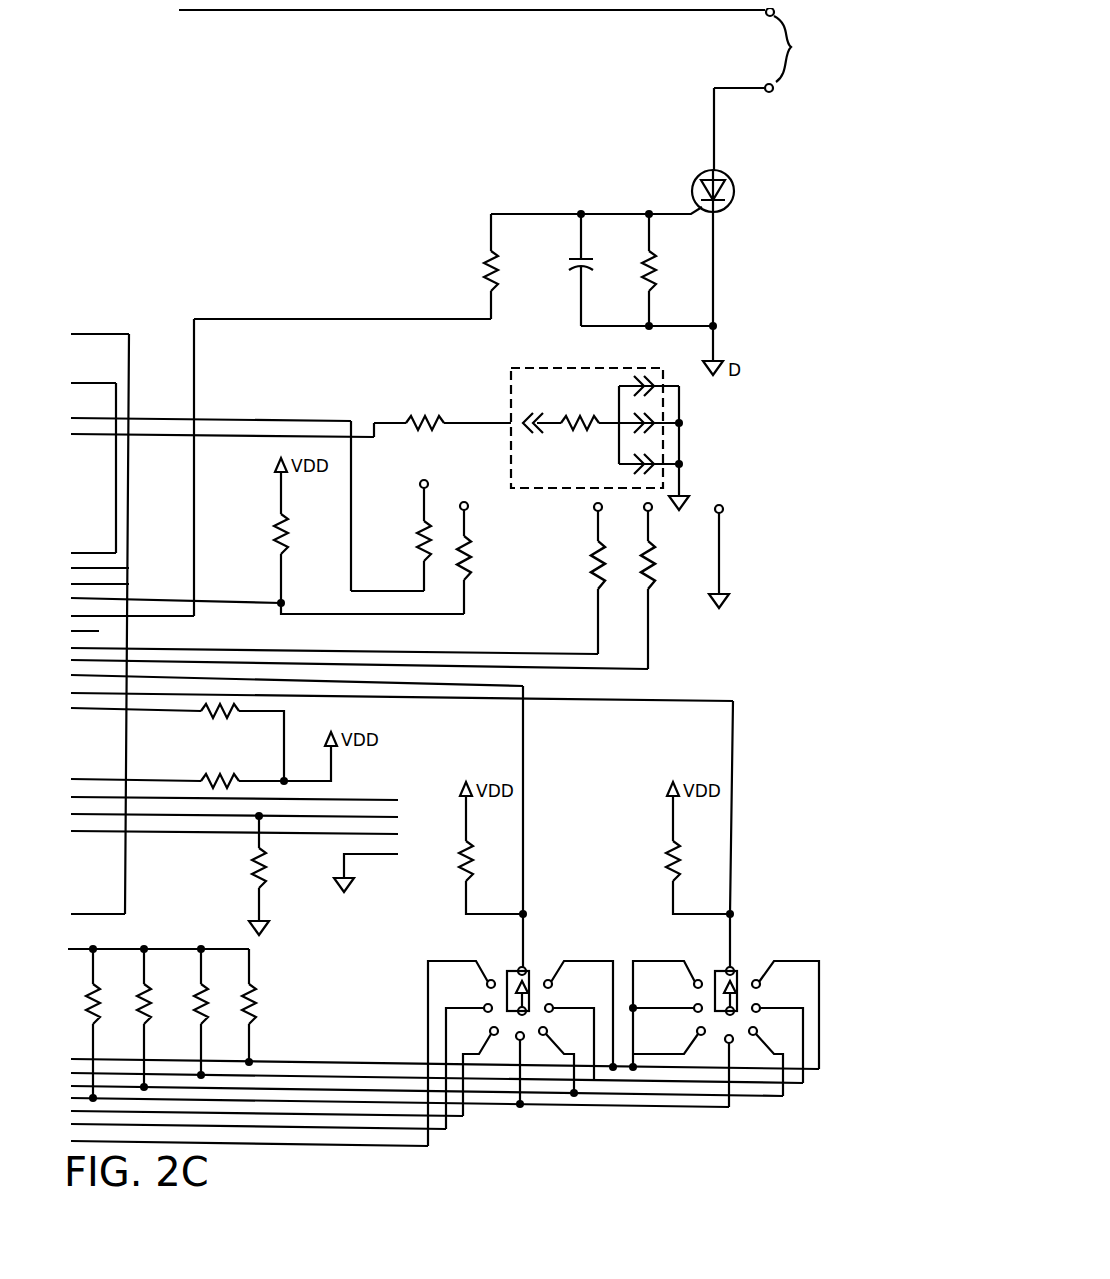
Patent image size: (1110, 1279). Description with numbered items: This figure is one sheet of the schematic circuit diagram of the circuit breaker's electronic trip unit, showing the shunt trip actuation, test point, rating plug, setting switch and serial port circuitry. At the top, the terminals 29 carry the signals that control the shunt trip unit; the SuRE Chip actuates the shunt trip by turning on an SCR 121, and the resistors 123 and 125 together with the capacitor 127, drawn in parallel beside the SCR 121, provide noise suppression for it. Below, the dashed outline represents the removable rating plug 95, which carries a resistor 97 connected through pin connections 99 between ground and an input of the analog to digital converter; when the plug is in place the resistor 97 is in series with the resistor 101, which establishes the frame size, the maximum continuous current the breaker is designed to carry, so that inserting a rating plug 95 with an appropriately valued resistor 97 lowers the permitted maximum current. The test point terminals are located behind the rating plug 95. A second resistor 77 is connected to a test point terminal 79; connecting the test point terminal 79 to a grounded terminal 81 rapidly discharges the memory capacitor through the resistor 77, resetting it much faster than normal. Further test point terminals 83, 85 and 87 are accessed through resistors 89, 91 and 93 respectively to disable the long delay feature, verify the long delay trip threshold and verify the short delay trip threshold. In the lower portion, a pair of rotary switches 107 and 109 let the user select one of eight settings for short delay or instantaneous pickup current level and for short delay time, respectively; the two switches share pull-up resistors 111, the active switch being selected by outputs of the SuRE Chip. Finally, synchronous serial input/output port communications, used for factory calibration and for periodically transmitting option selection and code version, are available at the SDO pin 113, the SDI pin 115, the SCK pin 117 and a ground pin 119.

The terminals 29 is at (767, 50).
The SCR 121 is at (691, 184).
The resistor 123 is at (498, 272).
The resistor 125 is at (655, 270).
The capacitor 127 is at (588, 262).
The rating plug 95 is at (508, 390).
The resistor 97 is at (586, 414).
The pin connections 99 is at (643, 380).
The resistor 101 is at (420, 412).
The second resistor 77 is at (418, 546).
The test point terminal 79 is at (421, 480).
The test point terminal 83 is at (463, 501).
The test point terminal 85 is at (593, 507).
The test point terminal 87 is at (652, 509).
The resistor 89 is at (470, 565).
The resistor 91 is at (590, 578).
The resistor 93 is at (653, 568).
The grounded terminal 81 is at (722, 506).
The rotary switch 107 is at (545, 952).
The rotary switch 109 is at (754, 952).
The pull-up resistors 111 is at (266, 1008).
The SDO pin 113 is at (399, 797).
The SDI pin 115 is at (399, 815).
The SCK pin 117 is at (401, 834).
The ground pin 119 is at (399, 857).